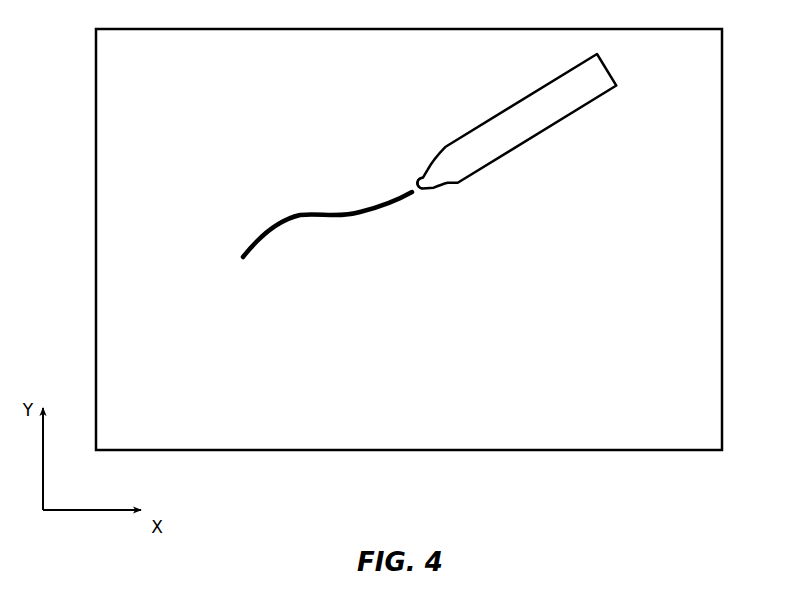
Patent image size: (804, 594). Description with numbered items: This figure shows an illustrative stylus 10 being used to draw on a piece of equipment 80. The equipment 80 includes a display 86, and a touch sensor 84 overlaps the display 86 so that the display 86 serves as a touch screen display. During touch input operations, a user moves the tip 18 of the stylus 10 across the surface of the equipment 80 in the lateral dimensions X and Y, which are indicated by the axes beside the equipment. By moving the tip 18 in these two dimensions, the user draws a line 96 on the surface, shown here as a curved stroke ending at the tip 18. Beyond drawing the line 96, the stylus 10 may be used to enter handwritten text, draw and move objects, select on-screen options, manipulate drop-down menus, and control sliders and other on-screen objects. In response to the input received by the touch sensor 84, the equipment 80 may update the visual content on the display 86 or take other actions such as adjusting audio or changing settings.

The stylus 10 is at (480, 123).
The tip 18 is at (409, 181).
The equipment 80 is at (723, 385).
The touch sensor 84 is at (694, 300).
The display 86 is at (694, 242).
The line 96 is at (378, 214).